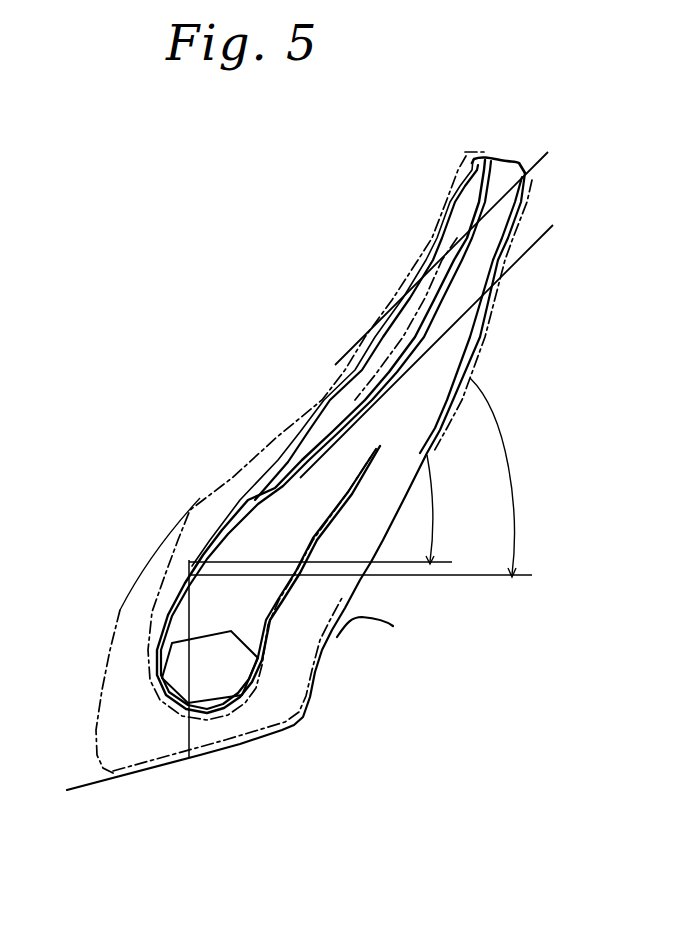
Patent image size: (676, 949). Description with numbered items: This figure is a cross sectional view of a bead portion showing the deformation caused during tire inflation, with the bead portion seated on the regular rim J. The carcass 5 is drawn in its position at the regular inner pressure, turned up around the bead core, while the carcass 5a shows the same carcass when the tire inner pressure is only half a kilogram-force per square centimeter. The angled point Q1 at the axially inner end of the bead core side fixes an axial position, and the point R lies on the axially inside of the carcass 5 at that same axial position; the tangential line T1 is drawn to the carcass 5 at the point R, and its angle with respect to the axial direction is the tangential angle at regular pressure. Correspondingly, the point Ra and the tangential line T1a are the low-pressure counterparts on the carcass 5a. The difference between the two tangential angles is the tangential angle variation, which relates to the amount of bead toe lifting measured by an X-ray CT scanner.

The carcass 5 is at (448, 268).
The carcass at 0.5 kgf/sq.cm 5a is at (419, 318).
The tangential line at 0.5 kgf/sq.cm T1a is at (330, 406).
The tangential line T1 is at (517, 262).
The point at 0.5 kgf/sq.cm Ra is at (188, 560).
The point R is at (193, 570).
The angled point Q1 is at (231, 788).
The regular rim J is at (80, 788).